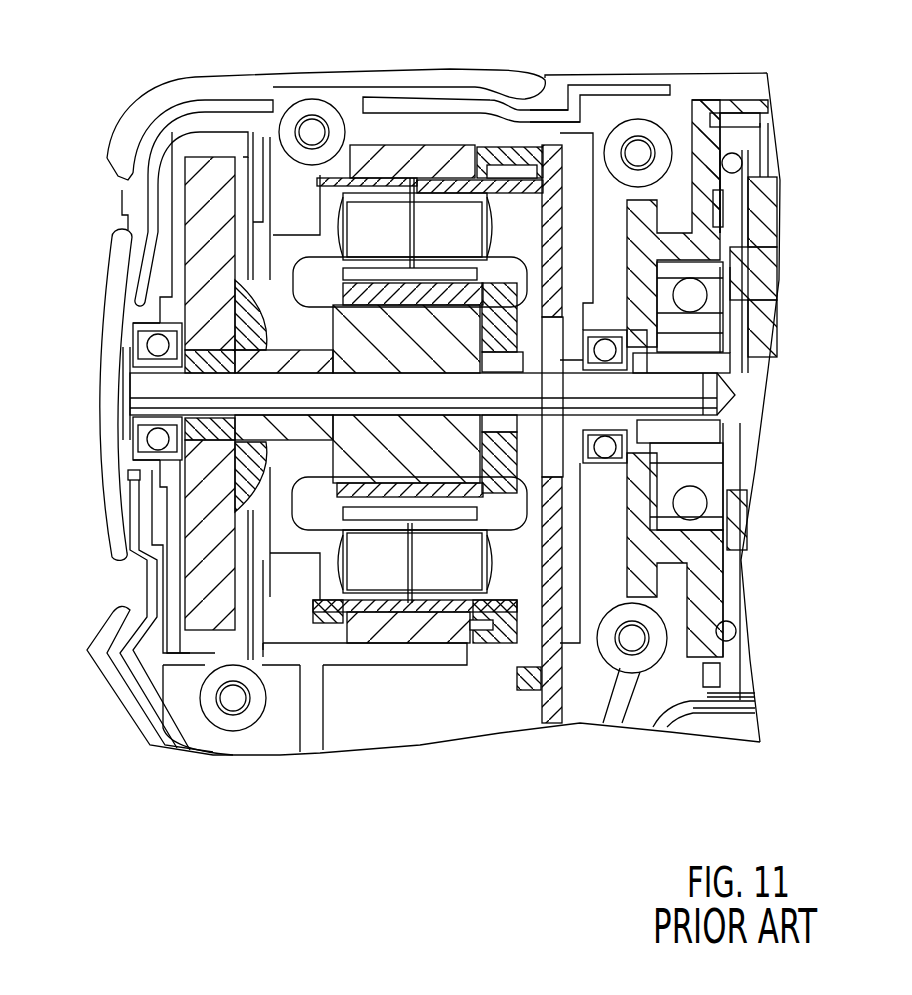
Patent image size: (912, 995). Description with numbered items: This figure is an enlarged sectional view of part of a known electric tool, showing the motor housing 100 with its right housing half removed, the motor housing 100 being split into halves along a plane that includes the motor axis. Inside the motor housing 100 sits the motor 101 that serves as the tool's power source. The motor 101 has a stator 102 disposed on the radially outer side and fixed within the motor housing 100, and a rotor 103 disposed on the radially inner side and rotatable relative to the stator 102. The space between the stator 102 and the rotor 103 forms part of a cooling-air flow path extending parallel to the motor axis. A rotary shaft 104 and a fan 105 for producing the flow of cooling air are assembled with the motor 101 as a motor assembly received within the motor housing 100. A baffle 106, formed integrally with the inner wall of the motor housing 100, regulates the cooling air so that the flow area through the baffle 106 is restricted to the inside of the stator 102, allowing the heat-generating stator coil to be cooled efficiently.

The motor housing 100 is at (181, 85).
The motor 101 is at (300, 198).
The stator 102 is at (398, 144).
The rotor 103 is at (329, 337).
The rotary shaft 104 is at (152, 393).
The fan 105 is at (177, 518).
The baffle 106 is at (236, 155).